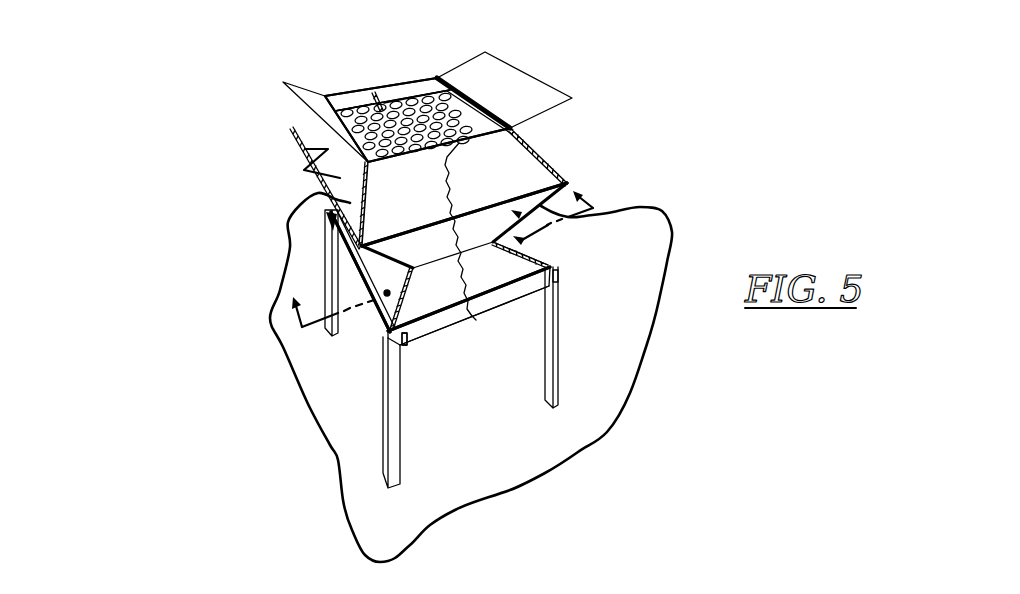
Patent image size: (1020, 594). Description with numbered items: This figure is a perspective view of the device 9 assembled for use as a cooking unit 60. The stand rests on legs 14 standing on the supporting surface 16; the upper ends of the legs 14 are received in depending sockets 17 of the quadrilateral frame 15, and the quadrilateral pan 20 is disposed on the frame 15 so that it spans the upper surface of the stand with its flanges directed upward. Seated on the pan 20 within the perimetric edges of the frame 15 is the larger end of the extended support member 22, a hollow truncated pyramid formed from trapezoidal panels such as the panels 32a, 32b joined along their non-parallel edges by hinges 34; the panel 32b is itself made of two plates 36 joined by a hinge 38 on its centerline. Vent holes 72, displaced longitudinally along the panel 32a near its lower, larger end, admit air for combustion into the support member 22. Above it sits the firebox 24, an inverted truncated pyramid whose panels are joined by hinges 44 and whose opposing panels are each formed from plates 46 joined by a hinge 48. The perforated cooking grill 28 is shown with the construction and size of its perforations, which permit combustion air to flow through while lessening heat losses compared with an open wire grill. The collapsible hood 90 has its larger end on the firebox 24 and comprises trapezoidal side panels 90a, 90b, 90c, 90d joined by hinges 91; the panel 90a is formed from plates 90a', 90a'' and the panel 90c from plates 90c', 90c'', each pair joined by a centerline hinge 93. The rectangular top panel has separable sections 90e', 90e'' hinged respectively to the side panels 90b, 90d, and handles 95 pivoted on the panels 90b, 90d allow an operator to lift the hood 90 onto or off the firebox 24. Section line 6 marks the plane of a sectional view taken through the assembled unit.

The device 9 is at (204, 346).
The cooking unit 60 is at (602, 165).
The hood 90 is at (368, 70).
The cooking grill 28 is at (475, 126).
The side panel 90a is at (479, 176).
The plate 90a' is at (412, 193).
The plate 90a'' is at (497, 180).
The side panel 90b is at (455, 90).
The side panel 90c is at (405, 63).
The plate 90c' is at (353, 102).
The plate 90c'' is at (417, 100).
The side panel 90d is at (326, 198).
The top panel section 90e' is at (513, 89).
The top panel section 90e'' is at (316, 106).
The hinge 91 is at (543, 160).
The hinge 93 is at (386, 93).
The handle 95 is at (303, 152).
The hinge 44 is at (364, 243).
The plate 46 is at (500, 235).
The hinge 48 is at (457, 250).
The section line 6 is at (446, 255).
The leg 14 is at (326, 290).
The frame 15 is at (485, 300).
The supporting surface 16 is at (636, 262).
The socket 17 is at (558, 284).
The pan 20 is at (322, 228).
The support member 22 is at (443, 312).
The firebox 24 is at (530, 228).
The panel 32a is at (375, 331).
The panel 32b is at (468, 305).
The hinge 34 is at (405, 337).
The plate 36 is at (445, 299).
The hinge 38 is at (469, 278).
The vent hole 72 is at (388, 289).